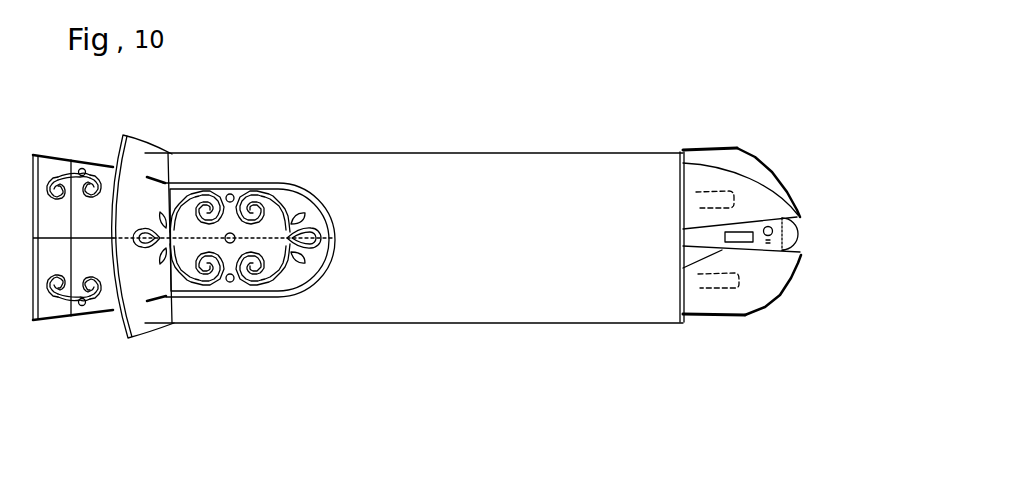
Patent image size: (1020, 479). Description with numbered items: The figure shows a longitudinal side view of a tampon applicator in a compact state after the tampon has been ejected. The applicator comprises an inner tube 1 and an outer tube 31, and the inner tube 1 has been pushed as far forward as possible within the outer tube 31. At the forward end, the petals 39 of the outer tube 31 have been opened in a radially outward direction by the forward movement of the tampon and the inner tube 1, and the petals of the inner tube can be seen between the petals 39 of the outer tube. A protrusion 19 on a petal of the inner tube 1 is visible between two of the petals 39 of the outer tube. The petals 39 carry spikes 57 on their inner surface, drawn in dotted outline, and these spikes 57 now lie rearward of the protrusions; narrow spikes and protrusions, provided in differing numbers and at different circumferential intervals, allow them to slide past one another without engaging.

The inner tube 1 is at (103, 290).
The protrusion 19 is at (680, 266).
The outer tube 31 is at (573, 177).
The petals 39 is at (690, 177).
The spikes 57 is at (695, 196).